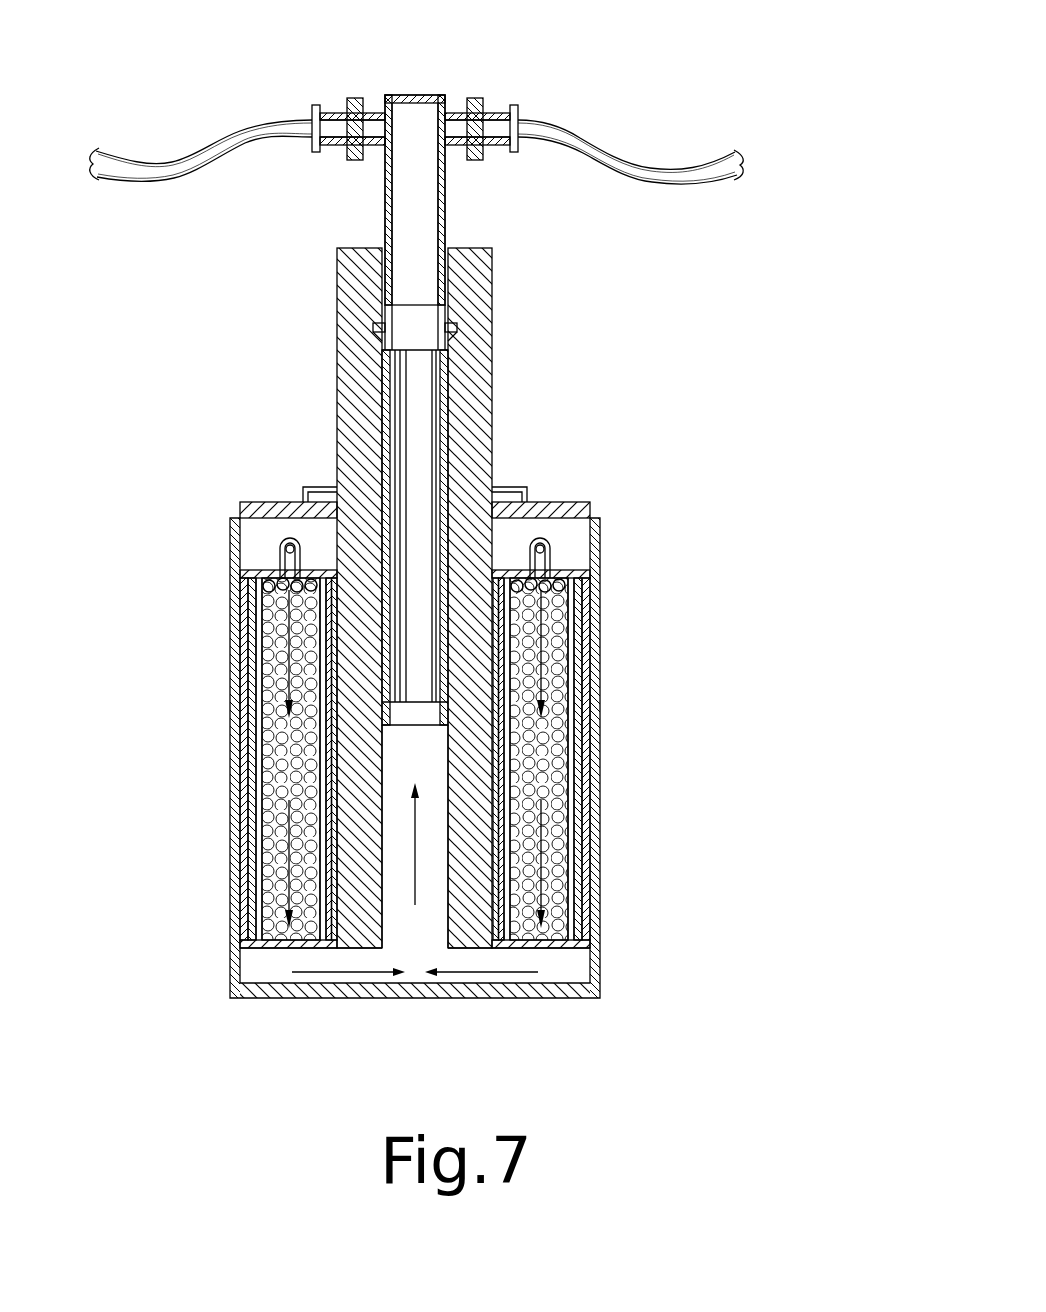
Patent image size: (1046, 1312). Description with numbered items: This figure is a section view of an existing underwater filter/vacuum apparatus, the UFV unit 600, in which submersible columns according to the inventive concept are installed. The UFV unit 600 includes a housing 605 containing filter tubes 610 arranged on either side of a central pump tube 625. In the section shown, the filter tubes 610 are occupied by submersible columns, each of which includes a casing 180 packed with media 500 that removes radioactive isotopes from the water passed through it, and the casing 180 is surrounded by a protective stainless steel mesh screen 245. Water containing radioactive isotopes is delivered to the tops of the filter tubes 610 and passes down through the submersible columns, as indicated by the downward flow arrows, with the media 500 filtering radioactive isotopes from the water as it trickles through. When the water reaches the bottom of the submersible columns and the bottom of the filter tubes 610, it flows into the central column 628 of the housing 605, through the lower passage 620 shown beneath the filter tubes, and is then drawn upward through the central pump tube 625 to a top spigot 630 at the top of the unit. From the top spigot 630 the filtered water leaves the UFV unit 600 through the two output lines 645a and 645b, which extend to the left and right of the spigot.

The UFV unit 600 is at (190, 1012).
The housing 605 is at (600, 810).
The filter tube 610 is at (418, 759).
The media 500 is at (276, 733).
The casing 180 is at (247, 903).
The stainless steel mesh screen 245 is at (247, 852).
The bottom flow channel 620 is at (292, 945).
The central pump tube 625 is at (492, 393).
The central column 628 is at (415, 895).
The top spigot 630 is at (415, 95).
The output line 645a is at (158, 182).
The output line 645b is at (663, 155).